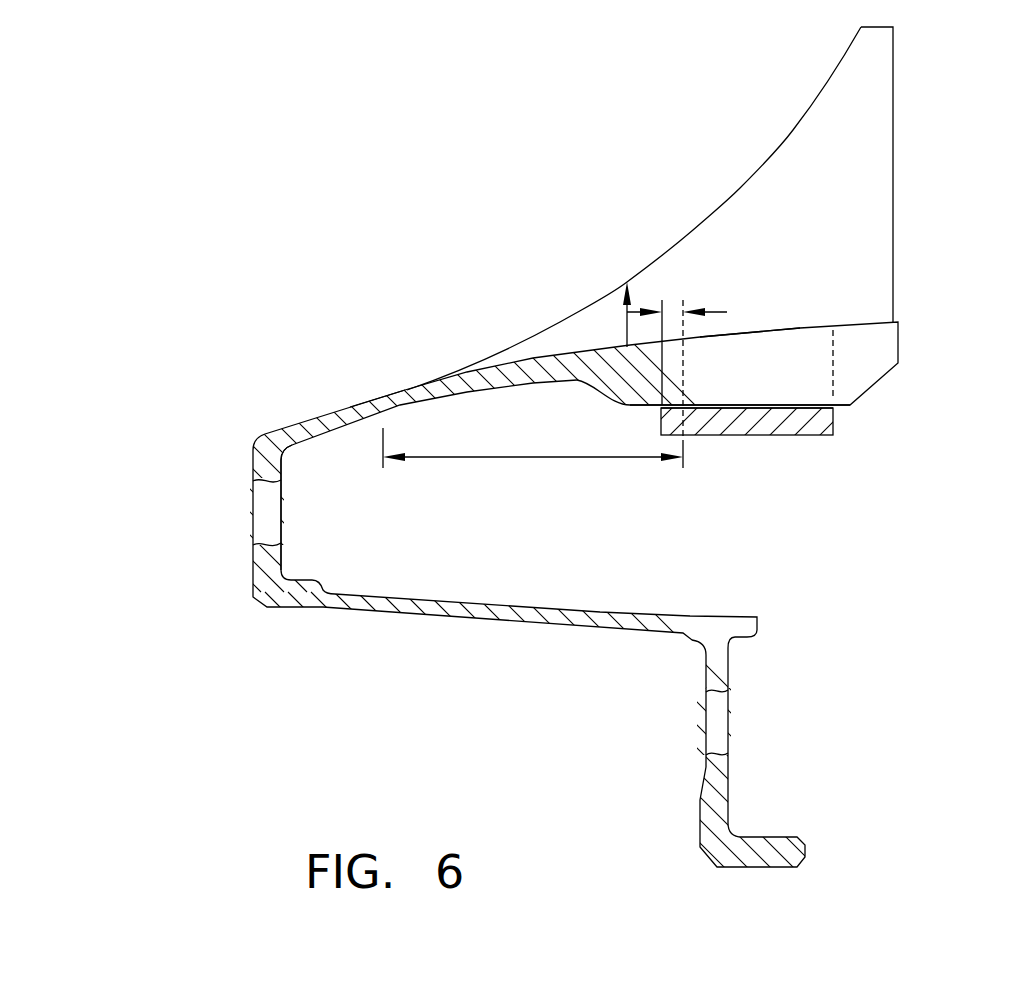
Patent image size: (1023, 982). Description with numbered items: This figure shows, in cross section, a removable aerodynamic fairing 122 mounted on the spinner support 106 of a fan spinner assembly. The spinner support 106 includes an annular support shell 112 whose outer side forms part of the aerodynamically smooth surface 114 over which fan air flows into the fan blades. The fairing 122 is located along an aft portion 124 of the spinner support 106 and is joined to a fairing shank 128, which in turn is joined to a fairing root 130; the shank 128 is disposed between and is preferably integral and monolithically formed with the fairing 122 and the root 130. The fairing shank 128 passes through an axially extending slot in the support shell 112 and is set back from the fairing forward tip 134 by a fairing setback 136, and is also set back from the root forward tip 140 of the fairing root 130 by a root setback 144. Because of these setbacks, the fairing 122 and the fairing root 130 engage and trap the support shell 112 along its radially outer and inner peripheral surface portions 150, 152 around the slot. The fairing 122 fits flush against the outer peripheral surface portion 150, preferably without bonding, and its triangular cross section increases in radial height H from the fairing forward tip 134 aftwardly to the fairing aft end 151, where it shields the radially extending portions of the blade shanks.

The spinner support 106 is at (420, 613).
The annular support shell 112 is at (362, 400).
The aerodynamically smooth surface 114 is at (307, 422).
The removable aerodynamic fairing 122 is at (742, 190).
The aft portion 124 is at (863, 350).
The fairing shank 128 is at (792, 368).
The fairing root 130 is at (807, 422).
The fairing forward tip 134 is at (378, 392).
The fairing setback 136 is at (520, 458).
The root forward tip 140 is at (660, 420).
The root setback 144 is at (727, 312).
The outer peripheral surface portion 150 is at (753, 332).
The fairing aft end 151 is at (893, 140).
The inner peripheral surface portion 152 is at (740, 407).
The radial height H is at (623, 326).